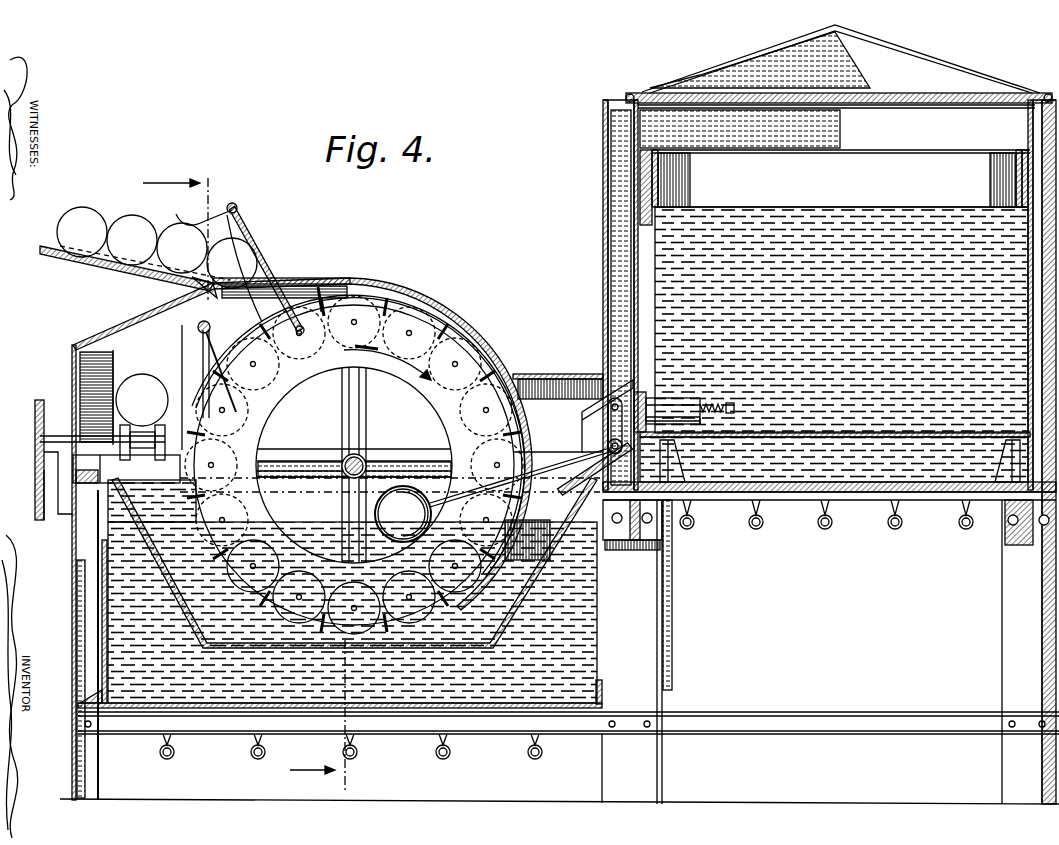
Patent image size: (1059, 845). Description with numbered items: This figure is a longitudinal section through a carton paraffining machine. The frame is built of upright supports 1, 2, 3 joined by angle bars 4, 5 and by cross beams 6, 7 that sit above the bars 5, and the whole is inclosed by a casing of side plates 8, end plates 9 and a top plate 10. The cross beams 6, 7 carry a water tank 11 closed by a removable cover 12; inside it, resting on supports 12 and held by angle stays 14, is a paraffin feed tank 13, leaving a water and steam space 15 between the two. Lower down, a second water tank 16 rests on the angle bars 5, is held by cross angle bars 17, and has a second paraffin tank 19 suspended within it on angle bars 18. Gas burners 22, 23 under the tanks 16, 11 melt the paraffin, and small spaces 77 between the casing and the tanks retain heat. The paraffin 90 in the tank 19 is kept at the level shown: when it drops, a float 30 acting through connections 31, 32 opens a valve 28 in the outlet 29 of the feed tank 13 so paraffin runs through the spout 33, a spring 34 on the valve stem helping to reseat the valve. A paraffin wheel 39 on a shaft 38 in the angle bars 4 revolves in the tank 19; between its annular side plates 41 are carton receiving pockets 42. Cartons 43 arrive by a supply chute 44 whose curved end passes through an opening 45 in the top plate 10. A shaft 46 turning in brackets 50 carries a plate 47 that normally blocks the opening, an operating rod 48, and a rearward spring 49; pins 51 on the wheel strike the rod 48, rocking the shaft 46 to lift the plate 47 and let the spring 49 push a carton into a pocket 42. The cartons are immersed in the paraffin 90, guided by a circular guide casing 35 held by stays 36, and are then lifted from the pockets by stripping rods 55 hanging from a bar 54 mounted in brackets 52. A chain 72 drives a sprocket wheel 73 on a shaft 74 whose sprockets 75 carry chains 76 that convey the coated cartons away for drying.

The upright support 1 is at (90, 553).
The upright support 2 is at (660, 655).
The upright support 3 is at (1000, 604).
The angle bar 4 is at (57, 470).
The angle bar 5 is at (572, 735).
The cross beam 6 is at (634, 548).
The cross beam 7 is at (1010, 530).
The side plate 8 is at (553, 374).
The end plate 9 is at (72, 626).
The top plate 10 is at (402, 294).
The water tank 11 is at (618, 212).
The removable cover 12 is at (705, 72).
The paraffin feed tank 13 is at (797, 154).
The angle stay 14 is at (658, 157).
The water and steam space 15 is at (662, 185).
The second water tank 16 is at (272, 700).
The cross angle bar 17 is at (128, 693).
The angle bar 18 is at (100, 483).
The second paraffin tank 19 is at (395, 647).
The gas burner 22 is at (222, 752).
The gas burner 23 is at (820, 530).
The valve 28 is at (662, 398).
The outlet 29 is at (702, 421).
The float 30 is at (403, 514).
The connection 31 is at (462, 496).
The connection 32 is at (607, 421).
The spout 33 is at (578, 463).
The spring 34 is at (710, 405).
The circular guide casing 35 is at (262, 588).
The stay 36 is at (190, 528).
The shaft 38 is at (362, 458).
The paraffin wheel 39 is at (277, 402).
The annular side plate 41 is at (452, 380).
The carton receiving pocket 42 is at (318, 362).
The carton 43 is at (173, 232).
The supply chute 44 is at (103, 262).
The opening 45 is at (300, 279).
The shaft 46 is at (239, 209).
The plate 47 is at (256, 263).
The operating rod 48 is at (313, 290).
The spring 49 is at (196, 219).
The bracket 50 is at (250, 238).
The pin 51 is at (380, 330).
The bracket 52 is at (200, 372).
The bar 54 is at (211, 328).
The stripping rod 55 is at (216, 366).
The chain 72 is at (40, 486).
The sprocket wheel 73 is at (35, 421).
The shaft 74 is at (97, 436).
The sprocket 75 is at (150, 448).
The chain 76 is at (126, 430).
The small space 77 is at (100, 581).
The paraffin 90 is at (272, 576).